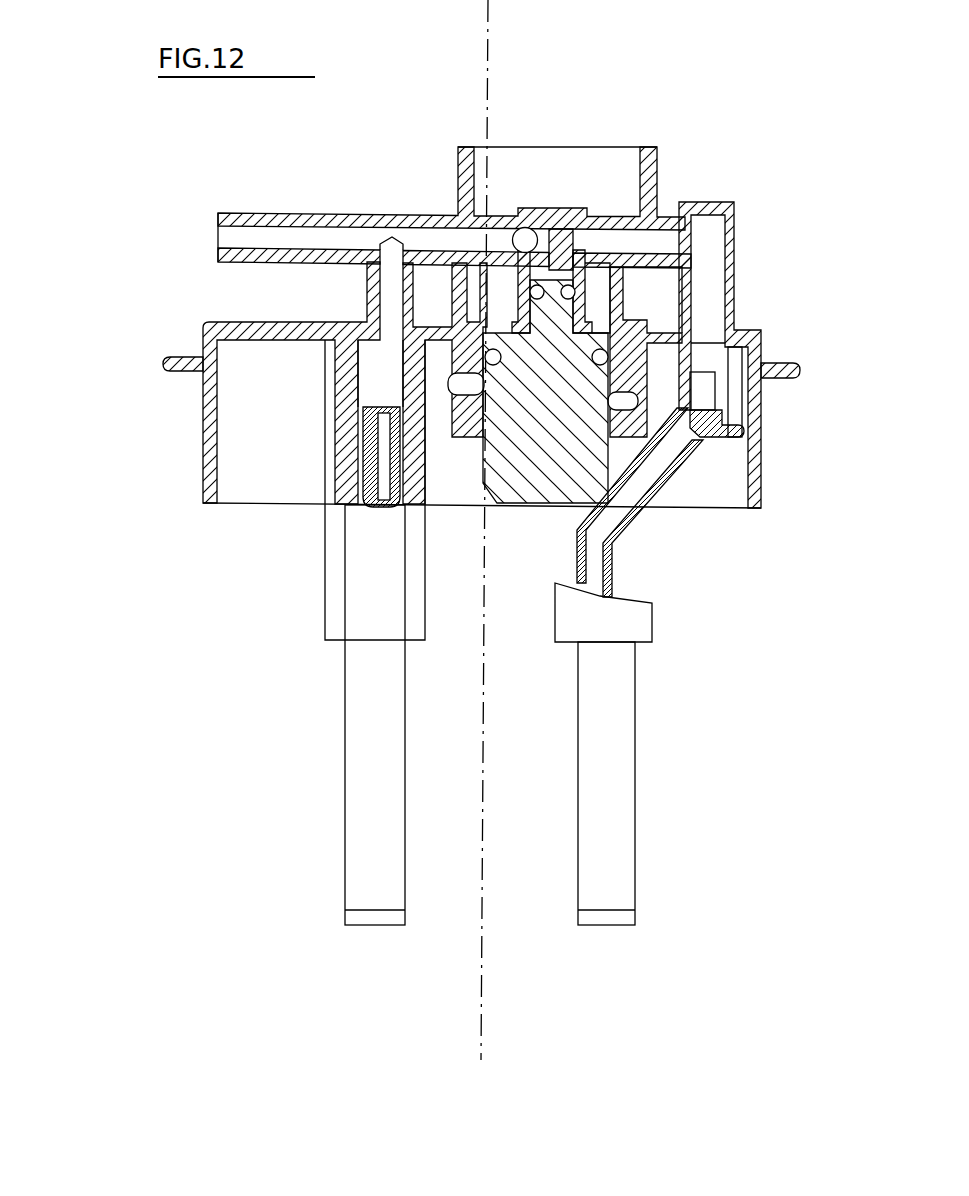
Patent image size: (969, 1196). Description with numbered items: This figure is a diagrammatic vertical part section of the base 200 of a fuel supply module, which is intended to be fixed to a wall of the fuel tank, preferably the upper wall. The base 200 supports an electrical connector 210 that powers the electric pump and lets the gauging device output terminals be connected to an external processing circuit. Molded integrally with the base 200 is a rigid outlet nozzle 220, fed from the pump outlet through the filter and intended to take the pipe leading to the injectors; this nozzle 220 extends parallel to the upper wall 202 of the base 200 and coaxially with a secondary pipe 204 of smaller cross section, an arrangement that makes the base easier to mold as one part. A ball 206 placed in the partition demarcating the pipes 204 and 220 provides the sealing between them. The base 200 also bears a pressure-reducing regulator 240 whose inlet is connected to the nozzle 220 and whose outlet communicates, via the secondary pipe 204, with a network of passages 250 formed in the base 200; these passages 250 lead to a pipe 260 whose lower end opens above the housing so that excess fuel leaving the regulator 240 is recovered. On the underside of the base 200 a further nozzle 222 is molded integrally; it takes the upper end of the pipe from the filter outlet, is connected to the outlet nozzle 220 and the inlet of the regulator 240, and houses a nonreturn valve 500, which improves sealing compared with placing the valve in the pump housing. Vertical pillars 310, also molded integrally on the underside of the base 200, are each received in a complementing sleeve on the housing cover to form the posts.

The base 200 is at (146, 334).
The upper wall 202 is at (268, 322).
The secondary pipe 204 is at (663, 240).
The ball 206 is at (518, 230).
The electrical connector 210 is at (565, 147).
The nozzle 220 is at (230, 235).
The nozzle 222 is at (358, 500).
The pressure-reducing regulator 240 is at (533, 457).
The network of passages 250 is at (712, 276).
The pipe 260 is at (625, 530).
The vertical pillar 310 is at (368, 772).
The nonreturn valve 500 is at (380, 455).